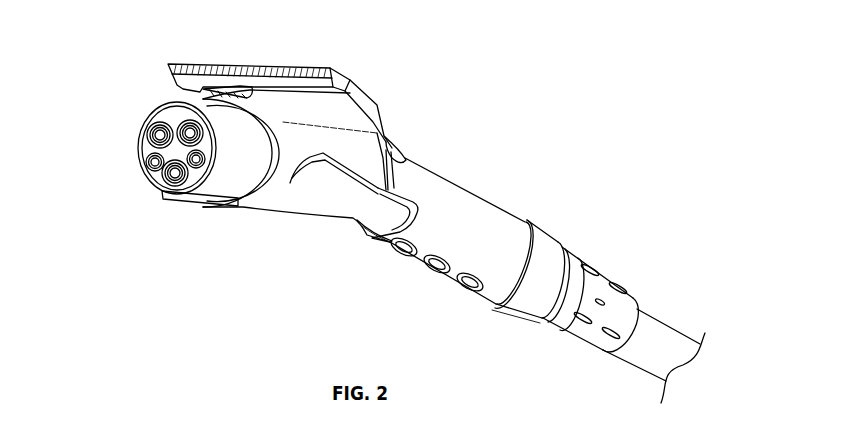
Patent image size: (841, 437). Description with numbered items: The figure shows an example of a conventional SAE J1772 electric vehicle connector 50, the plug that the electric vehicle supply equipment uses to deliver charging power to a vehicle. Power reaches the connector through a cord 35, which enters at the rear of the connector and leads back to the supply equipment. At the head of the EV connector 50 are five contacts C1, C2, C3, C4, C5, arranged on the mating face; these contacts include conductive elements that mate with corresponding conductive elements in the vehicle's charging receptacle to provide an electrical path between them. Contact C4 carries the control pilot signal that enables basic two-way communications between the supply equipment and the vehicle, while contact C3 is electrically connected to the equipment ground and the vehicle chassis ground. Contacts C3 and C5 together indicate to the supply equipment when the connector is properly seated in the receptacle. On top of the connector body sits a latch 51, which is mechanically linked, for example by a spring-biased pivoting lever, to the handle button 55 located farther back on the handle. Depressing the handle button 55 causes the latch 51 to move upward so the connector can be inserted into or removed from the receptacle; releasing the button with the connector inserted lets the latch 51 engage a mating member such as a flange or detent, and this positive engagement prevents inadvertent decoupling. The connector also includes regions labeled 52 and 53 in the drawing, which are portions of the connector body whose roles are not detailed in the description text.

The EV connector 50 is at (557, 58).
The latch 51 is at (186, 100).
The connector face insert 52 is at (153, 182).
The grip housing 53 is at (455, 192).
The handle button 55 is at (367, 87).
The cord 35 is at (653, 330).
The contact C1 is at (185, 122).
The contact C2 is at (148, 133).
The contact C3 is at (177, 190).
The contact C4 is at (148, 172).
The contact C5 is at (200, 166).